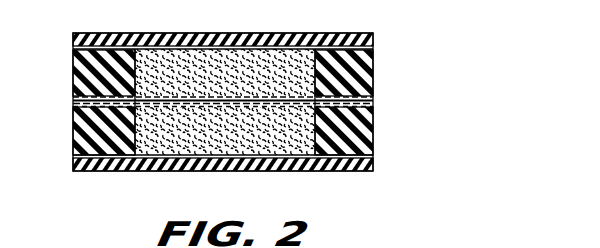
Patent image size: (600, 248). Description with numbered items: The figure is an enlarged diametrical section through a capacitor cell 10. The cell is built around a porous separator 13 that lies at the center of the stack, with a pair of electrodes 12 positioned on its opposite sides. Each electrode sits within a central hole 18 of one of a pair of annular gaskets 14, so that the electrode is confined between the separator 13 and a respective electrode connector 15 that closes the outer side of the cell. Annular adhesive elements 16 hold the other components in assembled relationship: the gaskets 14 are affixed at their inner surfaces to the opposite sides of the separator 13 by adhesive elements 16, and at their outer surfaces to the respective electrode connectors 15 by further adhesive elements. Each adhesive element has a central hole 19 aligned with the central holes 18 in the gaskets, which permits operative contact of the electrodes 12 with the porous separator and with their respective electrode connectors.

The capacitor cell 10 is at (397, 54).
The electrodes 12 is at (185, 66).
The separator 13 is at (82, 93).
The annular gaskets 14 is at (84, 123).
The electrode connectors 15 is at (243, 33).
The annular adhesive elements 16 is at (73, 67).
The central holes 18 is at (310, 70).
The central hole 19 is at (159, 45).